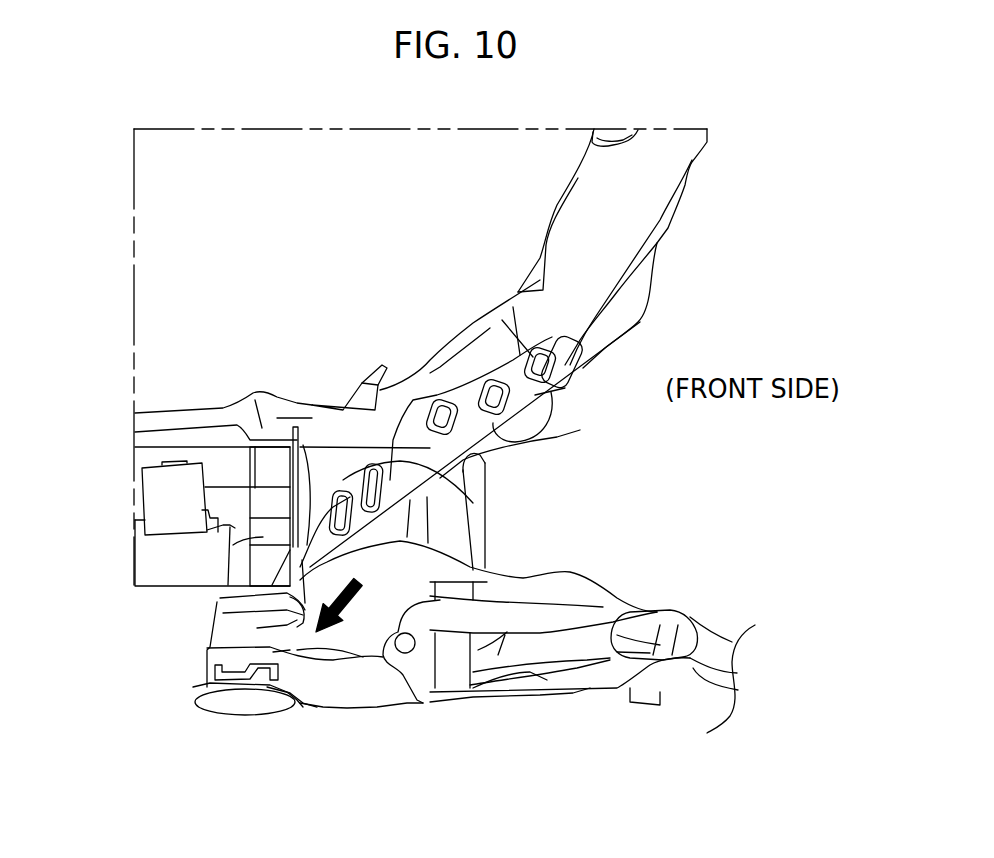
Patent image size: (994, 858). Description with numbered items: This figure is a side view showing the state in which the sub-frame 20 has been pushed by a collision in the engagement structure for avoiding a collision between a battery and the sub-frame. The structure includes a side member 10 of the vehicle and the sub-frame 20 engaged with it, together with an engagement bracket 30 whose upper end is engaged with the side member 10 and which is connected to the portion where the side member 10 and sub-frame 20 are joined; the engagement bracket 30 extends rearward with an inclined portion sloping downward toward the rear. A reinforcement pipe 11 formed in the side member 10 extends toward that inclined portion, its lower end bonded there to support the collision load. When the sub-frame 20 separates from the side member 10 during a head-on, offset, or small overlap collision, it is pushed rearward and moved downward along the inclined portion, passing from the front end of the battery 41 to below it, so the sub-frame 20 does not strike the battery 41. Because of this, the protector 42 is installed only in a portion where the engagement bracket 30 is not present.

The side member 10 is at (447, 366).
The reinforcement pipe 11 is at (452, 487).
The sub-frame 20 is at (360, 647).
The engagement bracket 30 is at (548, 436).
The battery 41 is at (163, 563).
The protector 42 is at (230, 528).